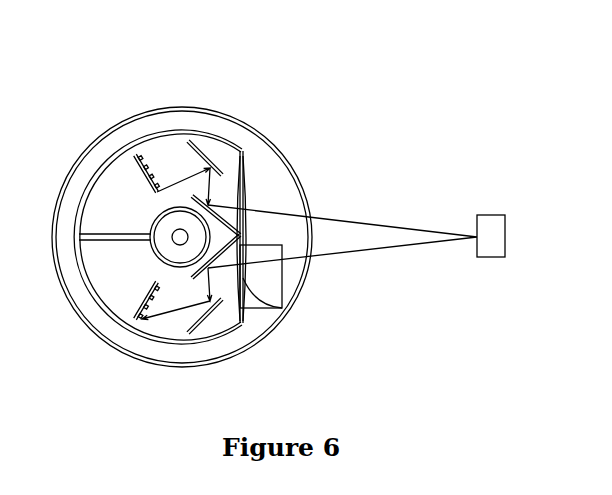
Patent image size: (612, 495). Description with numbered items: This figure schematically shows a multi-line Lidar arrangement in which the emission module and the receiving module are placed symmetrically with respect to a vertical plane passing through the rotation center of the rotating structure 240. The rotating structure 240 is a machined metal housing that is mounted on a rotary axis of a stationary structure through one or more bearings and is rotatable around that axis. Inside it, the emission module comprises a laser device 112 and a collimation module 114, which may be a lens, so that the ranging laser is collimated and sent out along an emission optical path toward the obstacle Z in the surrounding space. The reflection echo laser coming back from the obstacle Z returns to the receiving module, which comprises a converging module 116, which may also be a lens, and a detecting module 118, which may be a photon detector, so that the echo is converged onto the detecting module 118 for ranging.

The laser device 112 is at (157, 187).
The collimation module 114 is at (246, 187).
The converging module 116 is at (284, 306).
The detecting module 118 is at (137, 320).
The rotating structure 240 is at (94, 303).
The obstacle Z is at (487, 226).